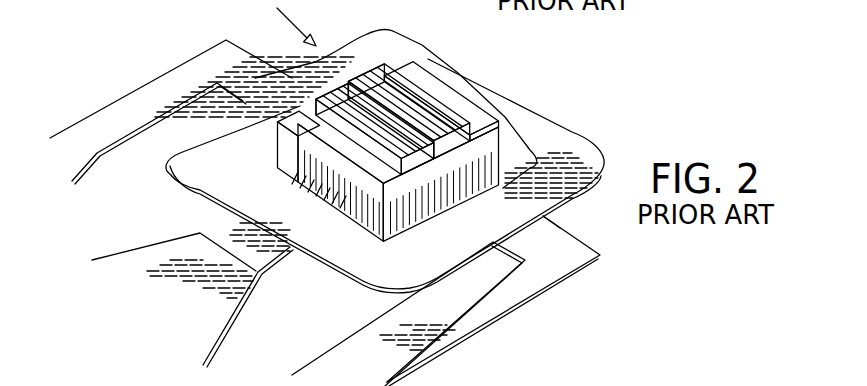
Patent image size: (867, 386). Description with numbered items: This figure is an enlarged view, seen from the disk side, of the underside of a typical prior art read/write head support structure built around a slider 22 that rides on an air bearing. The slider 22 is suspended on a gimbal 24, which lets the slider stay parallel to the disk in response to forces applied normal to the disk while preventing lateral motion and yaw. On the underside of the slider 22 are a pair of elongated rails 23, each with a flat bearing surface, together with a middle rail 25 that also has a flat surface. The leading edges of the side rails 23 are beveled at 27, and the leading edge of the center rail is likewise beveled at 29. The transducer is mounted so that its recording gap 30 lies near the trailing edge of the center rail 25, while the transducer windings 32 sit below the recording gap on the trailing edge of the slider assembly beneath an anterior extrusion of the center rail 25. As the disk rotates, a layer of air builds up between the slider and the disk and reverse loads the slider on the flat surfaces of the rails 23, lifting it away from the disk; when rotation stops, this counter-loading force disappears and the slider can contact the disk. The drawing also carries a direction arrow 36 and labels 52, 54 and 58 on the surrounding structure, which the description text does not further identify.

The slider 22 is at (396, 143).
The elongated rails 23 is at (392, 90).
The gimbal 24 is at (560, 134).
The middle rail 25 is at (418, 103).
The beveled leading edges of side rails 27 is at (272, 125).
The beveled leading edge of center rail 29 is at (320, 97).
The recording gap 30 is at (488, 127).
The transducer windings 32 is at (548, 212).
The direction arrow 36 is at (296, 23).
The lead 52 is at (171, 213).
The lead 54 is at (433, 314).
The lead 58 is at (531, 301).